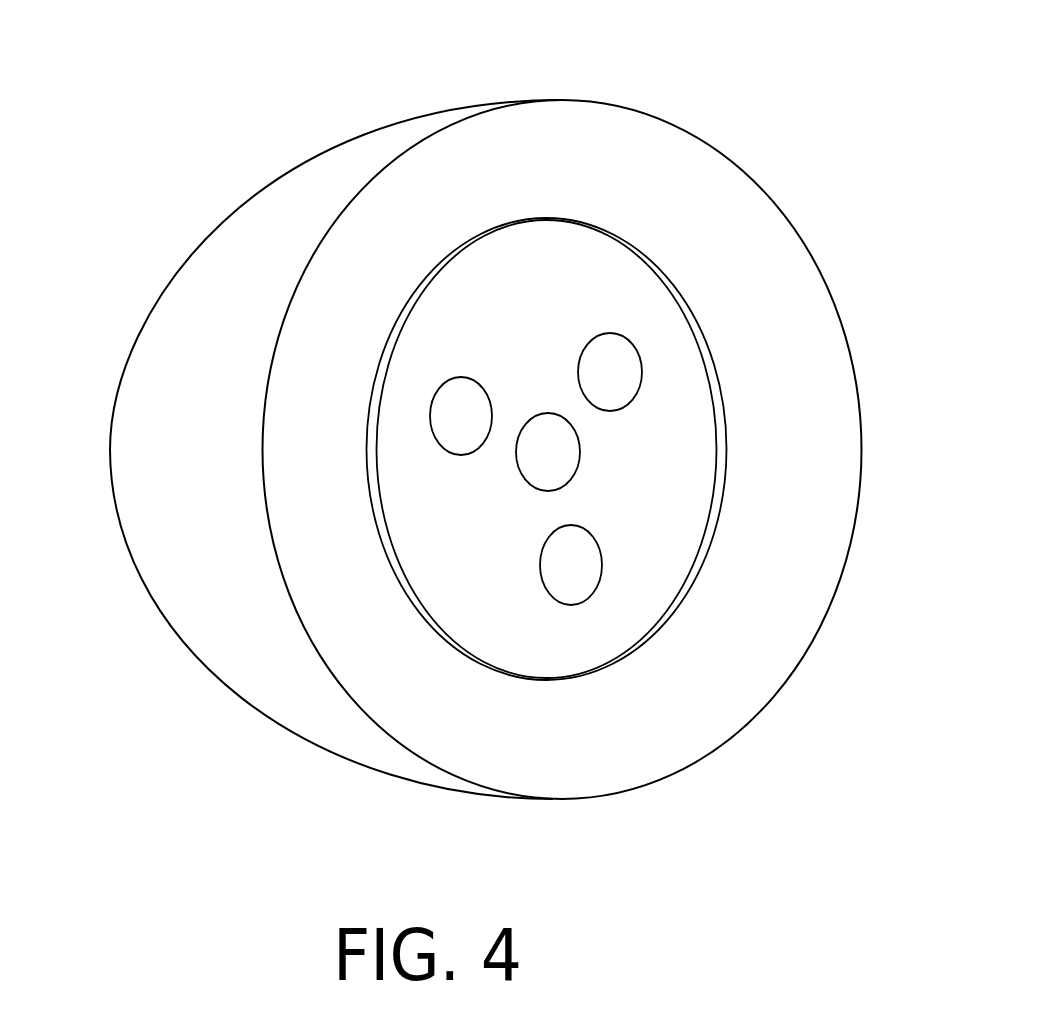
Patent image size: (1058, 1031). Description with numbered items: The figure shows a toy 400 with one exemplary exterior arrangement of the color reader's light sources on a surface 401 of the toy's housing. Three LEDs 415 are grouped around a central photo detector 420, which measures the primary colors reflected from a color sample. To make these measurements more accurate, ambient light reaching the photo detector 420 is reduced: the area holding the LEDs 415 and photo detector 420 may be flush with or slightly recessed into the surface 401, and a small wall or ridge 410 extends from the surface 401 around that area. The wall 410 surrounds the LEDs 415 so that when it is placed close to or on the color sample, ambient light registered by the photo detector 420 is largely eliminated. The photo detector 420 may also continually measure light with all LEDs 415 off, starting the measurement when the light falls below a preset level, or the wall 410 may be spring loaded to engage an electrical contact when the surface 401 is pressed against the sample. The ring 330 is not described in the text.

The toy 400 is at (592, 74).
The wall 410 is at (99, 253).
The surface 401 is at (256, 436).
The central ring 330 is at (722, 308).
The LEDs 415 is at (443, 431).
The photo detector 420 is at (530, 466).